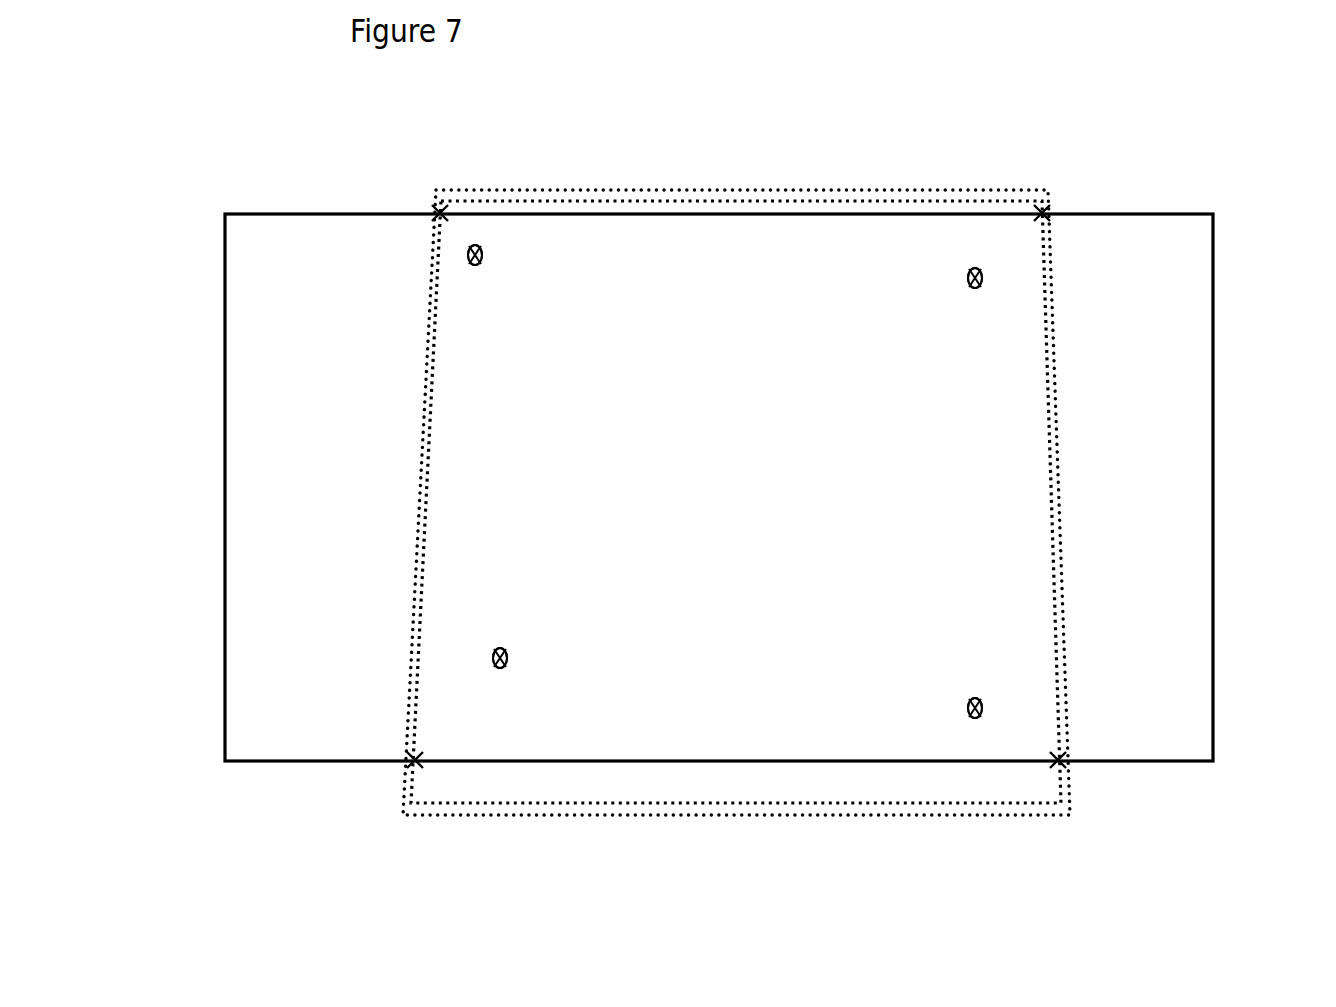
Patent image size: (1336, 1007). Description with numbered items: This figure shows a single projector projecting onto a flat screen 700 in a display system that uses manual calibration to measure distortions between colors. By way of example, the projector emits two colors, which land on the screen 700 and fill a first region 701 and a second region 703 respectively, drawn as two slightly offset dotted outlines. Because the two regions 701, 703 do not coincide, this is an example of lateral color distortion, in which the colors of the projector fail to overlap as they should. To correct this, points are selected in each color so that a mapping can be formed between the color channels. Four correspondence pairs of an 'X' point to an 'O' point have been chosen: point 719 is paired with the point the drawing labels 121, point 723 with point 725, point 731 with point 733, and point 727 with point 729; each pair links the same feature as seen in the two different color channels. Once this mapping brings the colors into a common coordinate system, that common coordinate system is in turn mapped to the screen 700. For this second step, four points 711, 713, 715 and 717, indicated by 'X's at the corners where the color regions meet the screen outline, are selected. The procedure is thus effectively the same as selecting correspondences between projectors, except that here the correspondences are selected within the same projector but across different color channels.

The screen 700 is at (208, 286).
The first color region 701 is at (992, 188).
The second color region 703 is at (1027, 181).
The screen mapping point 711 is at (417, 194).
The screen mapping point 713 is at (385, 788).
The screen mapping point 715 is at (1073, 238).
The screen mapping point 717 is at (1094, 720).
The correspondence point 719 is at (517, 688).
The alignment feature 121 is at (500, 658).
The correspondence point 723 is at (971, 751).
The correspondence point 725 is at (975, 708).
The correspondence point 727 is at (513, 230).
The correspondence point 729 is at (475, 255).
The correspondence point 731 is at (960, 245).
The correspondence point 733 is at (975, 278).